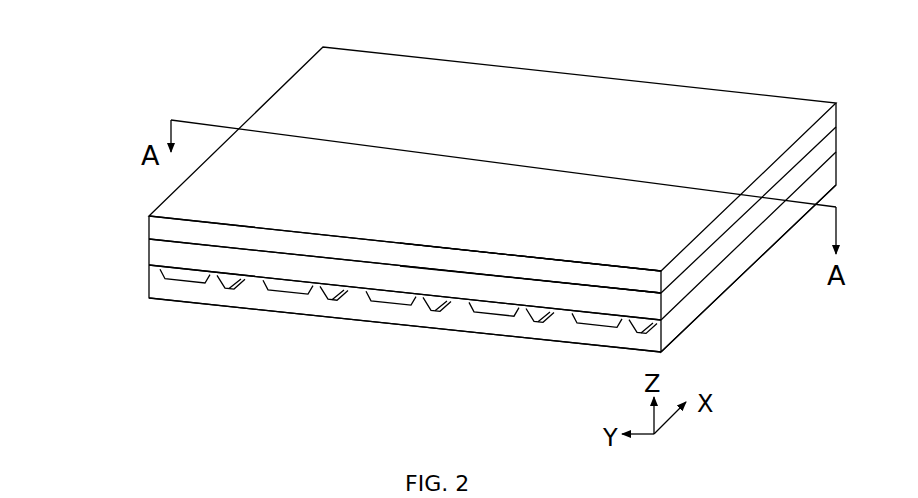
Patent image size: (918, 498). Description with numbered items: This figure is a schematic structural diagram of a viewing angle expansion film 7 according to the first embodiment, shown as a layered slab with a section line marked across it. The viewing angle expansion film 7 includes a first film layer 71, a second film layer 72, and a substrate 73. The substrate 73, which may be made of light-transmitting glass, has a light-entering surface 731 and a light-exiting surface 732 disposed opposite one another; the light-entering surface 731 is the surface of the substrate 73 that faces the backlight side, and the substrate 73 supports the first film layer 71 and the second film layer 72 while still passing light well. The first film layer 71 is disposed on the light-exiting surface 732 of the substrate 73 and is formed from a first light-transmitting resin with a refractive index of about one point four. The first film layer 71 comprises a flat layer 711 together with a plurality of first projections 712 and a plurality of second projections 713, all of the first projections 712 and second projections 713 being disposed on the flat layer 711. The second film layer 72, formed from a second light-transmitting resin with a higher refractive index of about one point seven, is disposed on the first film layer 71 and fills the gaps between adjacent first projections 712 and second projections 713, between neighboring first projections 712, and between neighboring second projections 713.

The viewing angle expansion film 7 is at (263, 60).
The substrate 73 is at (149, 228).
The light-exiting surface 732 is at (589, 262).
The light-entering surface 731 is at (571, 283).
The second film layer 72 is at (149, 293).
The first film layer 71 is at (277, 338).
The flat layer 711 is at (372, 278).
The second projections 713 is at (383, 295).
The first projections 712 is at (435, 302).